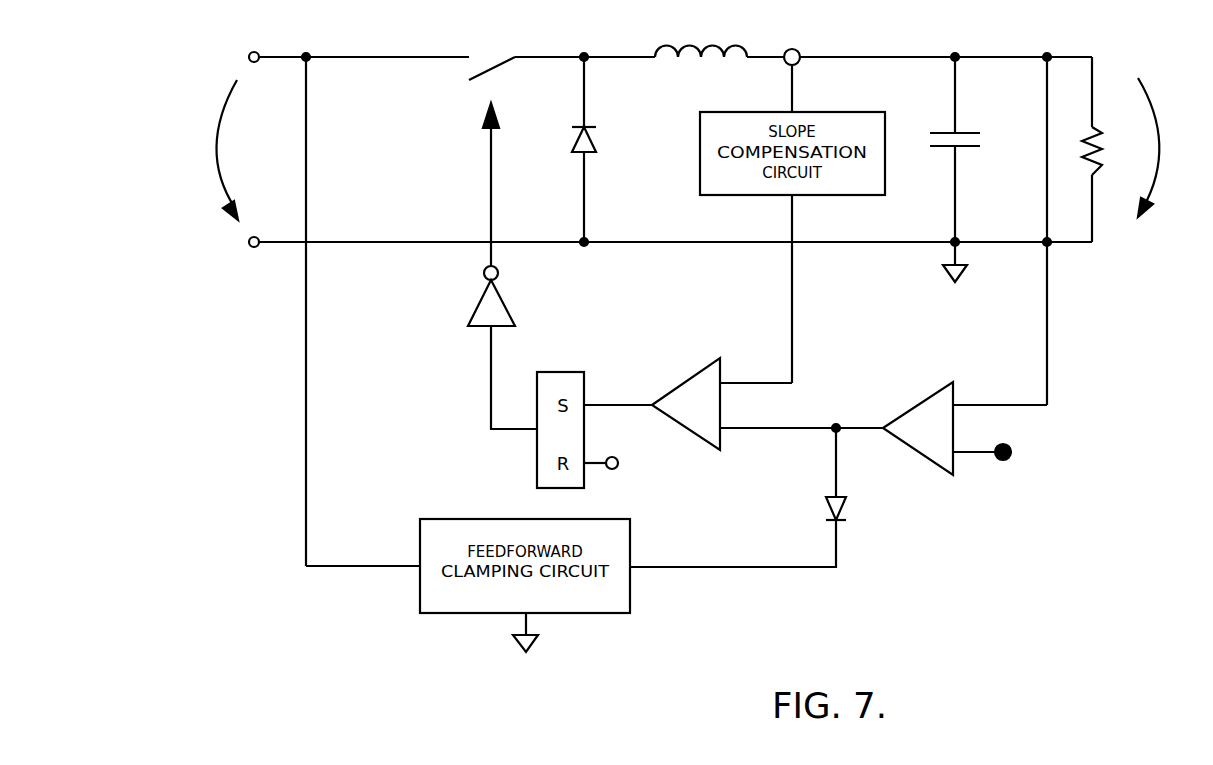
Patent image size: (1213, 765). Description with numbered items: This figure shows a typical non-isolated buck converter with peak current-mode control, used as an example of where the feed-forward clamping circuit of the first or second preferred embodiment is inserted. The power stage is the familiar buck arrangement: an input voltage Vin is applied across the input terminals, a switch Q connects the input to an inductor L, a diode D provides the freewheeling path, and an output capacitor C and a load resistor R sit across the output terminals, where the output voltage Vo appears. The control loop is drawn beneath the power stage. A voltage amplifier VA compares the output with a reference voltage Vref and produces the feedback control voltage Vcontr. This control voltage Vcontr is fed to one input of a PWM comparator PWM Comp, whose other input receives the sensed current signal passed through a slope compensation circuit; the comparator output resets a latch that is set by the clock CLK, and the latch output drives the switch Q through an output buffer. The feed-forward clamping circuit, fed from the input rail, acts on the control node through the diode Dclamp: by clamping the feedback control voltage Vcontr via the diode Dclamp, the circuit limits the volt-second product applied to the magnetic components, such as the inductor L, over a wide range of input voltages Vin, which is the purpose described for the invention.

The switch transistor Q is at (492, 45).
The inductor L is at (701, 34).
The diode D is at (599, 149).
The output capacitor C is at (960, 169).
The load resistor R is at (1107, 151).
The input voltage Vin is at (198, 150).
The output voltage Vo is at (1171, 147).
The PWM comparator PWM Comp is at (684, 385).
The voltage amplifier VA is at (918, 424).
The reference voltage Vref is at (1018, 458).
The control voltage node Vcontr is at (801, 445).
The diode Dclamp is at (779, 497).
The clock input CLK is at (625, 473).